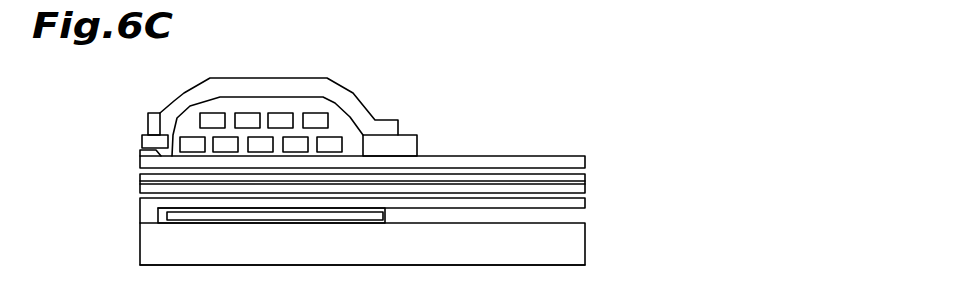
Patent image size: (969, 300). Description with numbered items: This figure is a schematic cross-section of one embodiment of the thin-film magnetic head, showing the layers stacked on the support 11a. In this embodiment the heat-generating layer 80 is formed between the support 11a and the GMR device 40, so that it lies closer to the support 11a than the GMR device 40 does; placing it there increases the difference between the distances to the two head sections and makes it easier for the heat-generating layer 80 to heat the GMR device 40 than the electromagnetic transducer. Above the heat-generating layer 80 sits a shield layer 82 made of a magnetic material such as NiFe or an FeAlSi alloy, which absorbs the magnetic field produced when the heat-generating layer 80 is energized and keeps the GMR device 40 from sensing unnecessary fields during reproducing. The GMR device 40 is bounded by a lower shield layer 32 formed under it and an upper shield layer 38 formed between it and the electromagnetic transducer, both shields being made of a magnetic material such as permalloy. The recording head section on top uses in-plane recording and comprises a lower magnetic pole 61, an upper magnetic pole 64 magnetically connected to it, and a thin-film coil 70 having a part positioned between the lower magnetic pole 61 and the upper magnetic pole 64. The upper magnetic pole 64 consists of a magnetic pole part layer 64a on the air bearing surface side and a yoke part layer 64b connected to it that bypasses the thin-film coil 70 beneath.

The upper magnetic pole 64 is at (87, 72).
The magnetic pole part layer 64a is at (141, 135).
The yoke part layer 64b is at (152, 113).
The thin-film coil 70 is at (328, 121).
The lower magnetic pole 61 is at (140, 150).
The upper shield layer 38 is at (140, 165).
The GMR device 40 is at (150, 181).
The lower shield layer 32 is at (140, 198).
The shield layer 82 is at (142, 217).
The heat-generating layer 80 is at (140, 238).
The support 11a is at (140, 256).